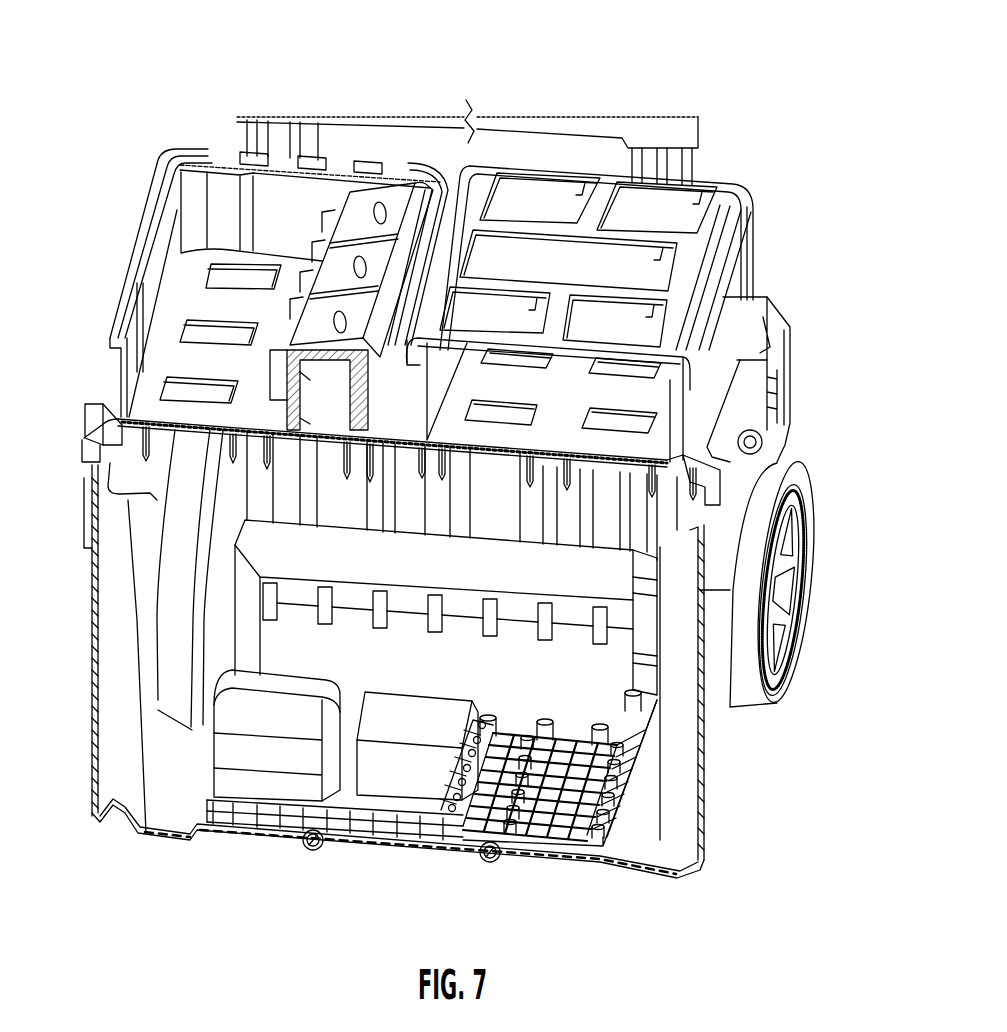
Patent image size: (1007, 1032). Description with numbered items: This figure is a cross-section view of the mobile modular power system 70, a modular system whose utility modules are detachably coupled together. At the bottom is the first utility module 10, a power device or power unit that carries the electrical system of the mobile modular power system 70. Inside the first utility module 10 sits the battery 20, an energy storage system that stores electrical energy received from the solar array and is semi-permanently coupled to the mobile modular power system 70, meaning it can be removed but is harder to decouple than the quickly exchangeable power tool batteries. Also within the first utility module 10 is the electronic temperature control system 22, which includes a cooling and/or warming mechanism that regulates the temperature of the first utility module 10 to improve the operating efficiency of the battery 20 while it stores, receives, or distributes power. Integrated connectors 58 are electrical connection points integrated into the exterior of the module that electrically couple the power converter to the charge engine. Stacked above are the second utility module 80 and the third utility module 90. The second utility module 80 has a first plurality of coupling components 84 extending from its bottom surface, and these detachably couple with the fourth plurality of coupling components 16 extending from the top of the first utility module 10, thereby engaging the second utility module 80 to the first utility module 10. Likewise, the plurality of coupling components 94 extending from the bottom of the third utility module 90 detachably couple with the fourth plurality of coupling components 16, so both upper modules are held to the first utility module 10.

The first utility module 10 is at (453, 587).
The fourth plurality of coupling components 16 is at (585, 486).
The battery 20 is at (518, 706).
The electronic temperature control system 22 is at (561, 826).
The integrated connectors 58 is at (343, 449).
The mobile modular power system 70 is at (127, 105).
The second utility module 80 is at (106, 302).
The first plurality of coupling components 84 is at (182, 410).
The third utility module 90 is at (768, 242).
The plurality of coupling components 94 is at (636, 425).